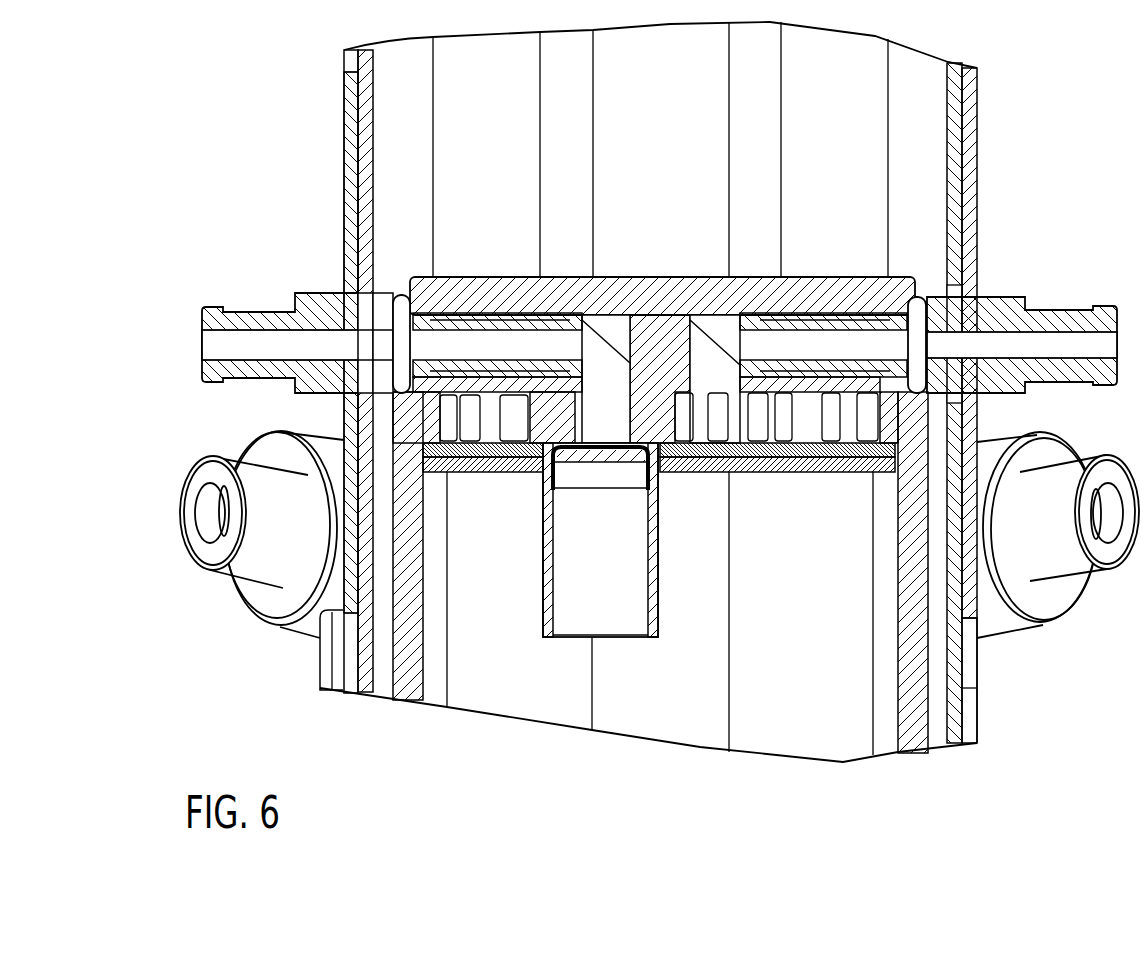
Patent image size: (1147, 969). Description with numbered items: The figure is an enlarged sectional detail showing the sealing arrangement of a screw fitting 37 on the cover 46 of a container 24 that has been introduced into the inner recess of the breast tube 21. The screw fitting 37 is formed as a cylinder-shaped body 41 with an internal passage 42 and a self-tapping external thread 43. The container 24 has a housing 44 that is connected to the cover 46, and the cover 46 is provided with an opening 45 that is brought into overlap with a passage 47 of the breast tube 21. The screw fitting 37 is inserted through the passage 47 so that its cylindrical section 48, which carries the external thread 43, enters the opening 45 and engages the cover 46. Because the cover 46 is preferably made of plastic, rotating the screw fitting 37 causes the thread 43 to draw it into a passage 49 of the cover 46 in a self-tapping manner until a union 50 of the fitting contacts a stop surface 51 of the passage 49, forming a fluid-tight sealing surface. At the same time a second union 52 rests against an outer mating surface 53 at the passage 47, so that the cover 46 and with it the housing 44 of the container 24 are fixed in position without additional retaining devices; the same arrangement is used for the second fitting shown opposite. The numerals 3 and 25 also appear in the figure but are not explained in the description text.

The connection piece 3 is at (1080, 374).
The breast tube 21 is at (973, 243).
The container 24 is at (983, 690).
The fastening element 25 is at (313, 662).
The screw fitting 37 is at (220, 383).
The cylinder-shaped body 41 is at (278, 338).
The internal passage 42 is at (257, 337).
The self-tapping external thread 43 is at (563, 300).
The housing 44 is at (898, 662).
The opening 45 is at (393, 294).
The cover 46 is at (502, 292).
The passage 47 is at (347, 296).
The cylindrical section 48 is at (582, 368).
The passage 49 is at (573, 455).
The union 50 is at (455, 300).
The stop surface 51 is at (440, 377).
The union 52 is at (300, 393).
The outer mating surface 53 is at (345, 395).